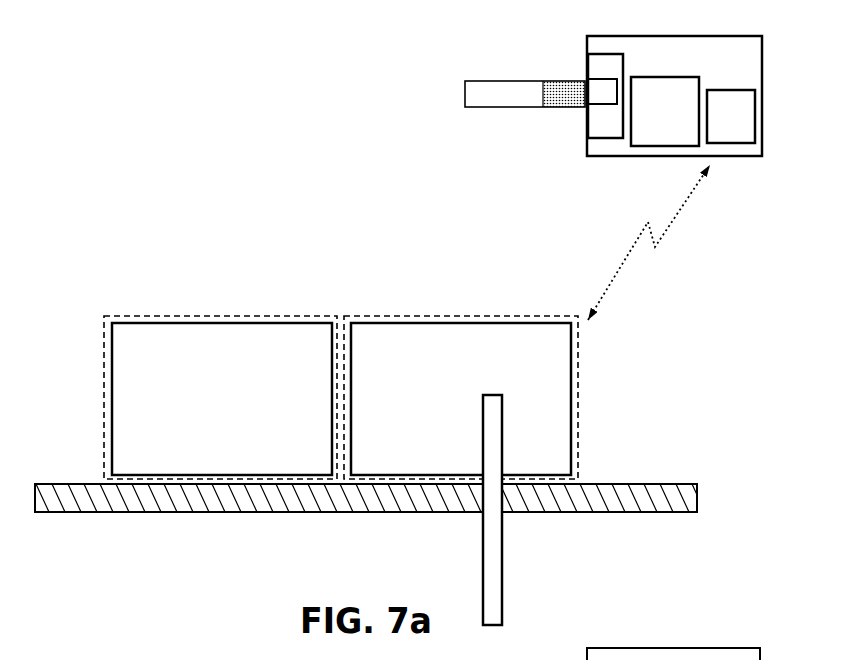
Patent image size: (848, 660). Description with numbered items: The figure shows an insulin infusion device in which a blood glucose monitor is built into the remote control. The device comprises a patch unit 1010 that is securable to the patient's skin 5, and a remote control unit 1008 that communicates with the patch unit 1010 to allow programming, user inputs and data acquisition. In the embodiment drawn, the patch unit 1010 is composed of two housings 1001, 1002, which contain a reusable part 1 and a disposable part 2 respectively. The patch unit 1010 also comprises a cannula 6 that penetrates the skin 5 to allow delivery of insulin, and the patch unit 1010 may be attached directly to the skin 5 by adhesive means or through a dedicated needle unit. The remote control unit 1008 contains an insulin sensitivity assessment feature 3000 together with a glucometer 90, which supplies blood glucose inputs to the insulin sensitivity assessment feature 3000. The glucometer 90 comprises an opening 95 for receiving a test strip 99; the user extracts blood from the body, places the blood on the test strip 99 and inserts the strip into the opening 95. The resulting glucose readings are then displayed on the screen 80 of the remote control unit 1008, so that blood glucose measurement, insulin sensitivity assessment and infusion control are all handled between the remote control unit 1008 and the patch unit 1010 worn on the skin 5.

The reusable part 1 is at (133, 395).
The disposable part 2 is at (557, 362).
The patient's skin 5 is at (702, 503).
The cannula 6 is at (490, 557).
The screen 80 is at (648, 128).
The glucometer 90 is at (600, 142).
The opening 95 is at (607, 90).
The test strip 99 is at (518, 117).
The housing 1001 is at (182, 315).
The housing 1002 is at (580, 418).
The remote control unit 1008 is at (570, 157).
The patch unit 1010 is at (315, 227).
The insulin sensitivity assessment feature 3000 is at (740, 145).